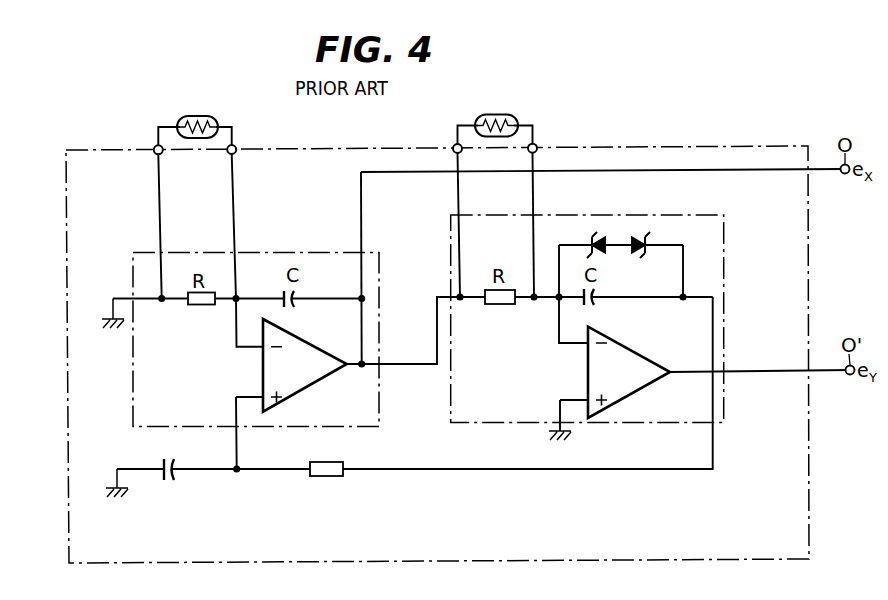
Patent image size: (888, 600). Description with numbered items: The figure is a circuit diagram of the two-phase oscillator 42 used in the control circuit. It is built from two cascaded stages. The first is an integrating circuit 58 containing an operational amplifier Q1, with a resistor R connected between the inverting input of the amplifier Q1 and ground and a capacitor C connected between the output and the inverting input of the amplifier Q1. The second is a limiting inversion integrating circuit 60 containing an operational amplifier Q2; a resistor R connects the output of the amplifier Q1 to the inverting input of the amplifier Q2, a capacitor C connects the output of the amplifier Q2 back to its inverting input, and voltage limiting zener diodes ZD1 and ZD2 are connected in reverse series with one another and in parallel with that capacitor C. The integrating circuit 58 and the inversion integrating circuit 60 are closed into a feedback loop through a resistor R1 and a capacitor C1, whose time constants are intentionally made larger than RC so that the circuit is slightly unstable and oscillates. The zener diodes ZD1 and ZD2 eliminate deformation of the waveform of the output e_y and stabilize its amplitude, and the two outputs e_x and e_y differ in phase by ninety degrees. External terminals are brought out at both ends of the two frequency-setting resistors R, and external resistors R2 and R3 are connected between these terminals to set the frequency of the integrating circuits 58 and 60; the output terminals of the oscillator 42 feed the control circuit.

The two-phase oscillator 42 is at (809, 462).
The integrating circuit 58 is at (133, 351).
The limiting inversion integrating circuit 60 is at (724, 305).
The external resistor R2 is at (204, 117).
The external resistor R3 is at (502, 115).
The operational amplifier Q1 is at (300, 391).
The operational amplifier Q2 is at (647, 392).
The voltage limiting zener diode ZD1 is at (593, 236).
The voltage limiting zener diode ZD2 is at (639, 236).
The capacitor C1 is at (168, 481).
The resistor R1 is at (326, 481).